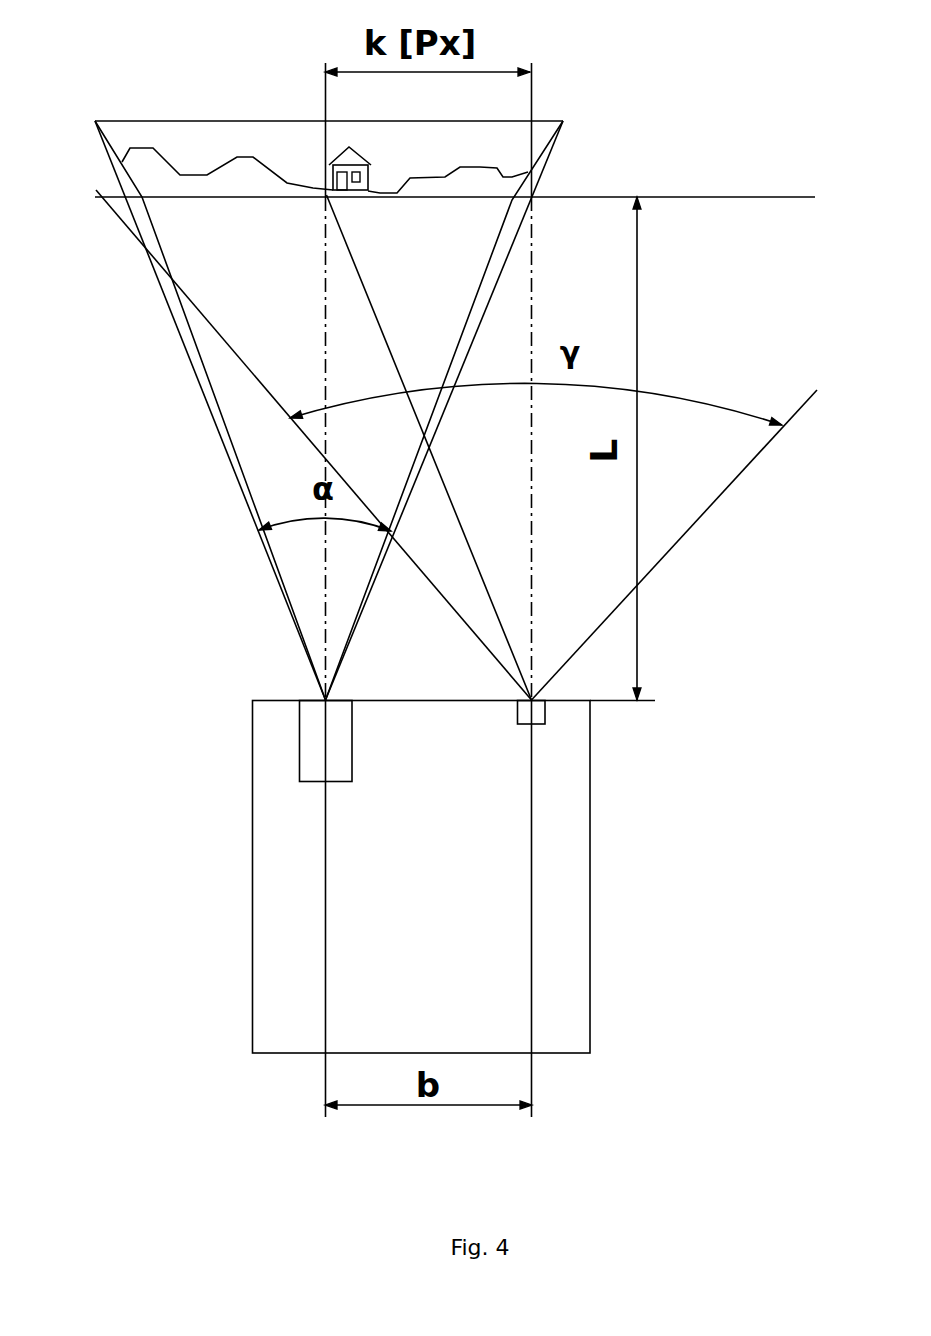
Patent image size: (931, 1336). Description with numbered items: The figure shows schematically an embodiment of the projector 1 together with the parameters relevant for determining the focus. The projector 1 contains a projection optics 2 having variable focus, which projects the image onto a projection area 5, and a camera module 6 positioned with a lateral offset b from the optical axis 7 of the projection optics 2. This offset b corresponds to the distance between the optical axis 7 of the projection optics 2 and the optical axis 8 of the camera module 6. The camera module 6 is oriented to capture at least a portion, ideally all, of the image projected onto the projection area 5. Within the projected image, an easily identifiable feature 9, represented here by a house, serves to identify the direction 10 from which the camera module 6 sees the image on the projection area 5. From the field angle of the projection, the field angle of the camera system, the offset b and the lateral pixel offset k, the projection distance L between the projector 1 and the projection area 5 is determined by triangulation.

The projector 1 is at (583, 998).
The projection optics 2 is at (302, 769).
The projection area 5 is at (548, 120).
The camera module 6 is at (548, 715).
The optical axis of the projection optics 7 is at (320, 328).
The optical axis of the camera 8 is at (535, 312).
The feature 9 is at (338, 150).
The direction 10 is at (373, 277).